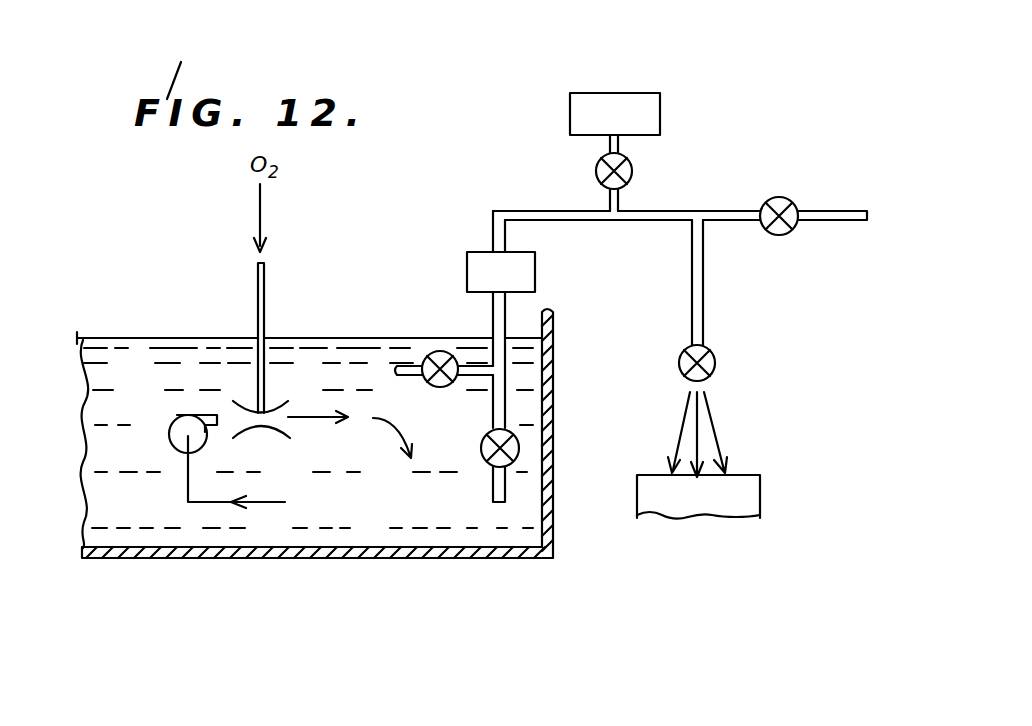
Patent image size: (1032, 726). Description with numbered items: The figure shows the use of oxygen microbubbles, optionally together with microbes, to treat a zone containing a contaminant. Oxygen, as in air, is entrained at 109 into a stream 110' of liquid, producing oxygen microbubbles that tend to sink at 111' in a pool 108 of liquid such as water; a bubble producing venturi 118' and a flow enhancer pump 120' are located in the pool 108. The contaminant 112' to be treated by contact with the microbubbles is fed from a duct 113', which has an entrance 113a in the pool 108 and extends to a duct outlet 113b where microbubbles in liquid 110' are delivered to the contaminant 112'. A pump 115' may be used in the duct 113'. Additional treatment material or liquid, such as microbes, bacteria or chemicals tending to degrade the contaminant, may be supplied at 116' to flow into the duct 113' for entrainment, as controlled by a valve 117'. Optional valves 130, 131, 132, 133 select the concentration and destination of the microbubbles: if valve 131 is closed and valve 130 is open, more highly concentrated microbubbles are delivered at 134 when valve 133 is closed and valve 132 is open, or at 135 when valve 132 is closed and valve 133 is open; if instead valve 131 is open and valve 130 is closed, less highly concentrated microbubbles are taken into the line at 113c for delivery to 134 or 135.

The pool of liquid 108 is at (120, 492).
The oxygen entrainment point 109 is at (253, 288).
The stream of liquid 110' is at (290, 367).
The sinking microbubbles 111' is at (385, 513).
The contaminant 112' is at (741, 498).
The duct 113' is at (680, 319).
The duct entrance 113a is at (500, 505).
The duct outlet 113b is at (692, 383).
The intake into line 113c is at (397, 373).
The pump 115' is at (472, 234).
The treatment material supply 116' is at (665, 106).
The valve 117' is at (657, 173).
The bubble producing venturi 118' is at (242, 517).
The flow enhancer pump 120' is at (131, 373).
The valve 130 is at (518, 458).
The valve 131 is at (438, 349).
The valve 132 is at (712, 352).
The valve 133 is at (770, 200).
The microbubble delivery point 134 is at (715, 425).
The alternate microbubble delivery point 135 is at (866, 214).